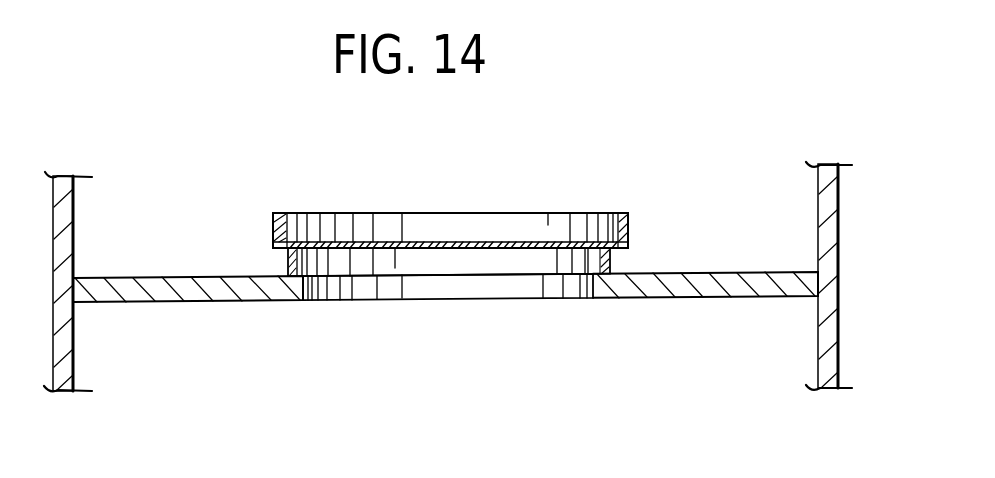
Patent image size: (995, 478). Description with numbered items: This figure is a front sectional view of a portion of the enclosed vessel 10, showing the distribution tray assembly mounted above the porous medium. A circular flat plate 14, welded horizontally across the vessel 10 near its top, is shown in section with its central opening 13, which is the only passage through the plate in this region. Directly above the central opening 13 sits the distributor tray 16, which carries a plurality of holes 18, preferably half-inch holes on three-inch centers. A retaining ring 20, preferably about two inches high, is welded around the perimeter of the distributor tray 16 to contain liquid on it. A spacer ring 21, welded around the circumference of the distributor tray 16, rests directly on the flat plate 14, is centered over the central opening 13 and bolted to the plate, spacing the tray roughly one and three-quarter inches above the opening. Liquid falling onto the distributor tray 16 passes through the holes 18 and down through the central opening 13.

The enclosed vessel 10 is at (73, 337).
The central opening 13 is at (448, 321).
The flat plate 14 is at (727, 297).
The distributor tray 16 is at (447, 247).
The holes 18 is at (413, 250).
The retaining ring 20 is at (629, 218).
The spacer ring 21 is at (285, 263).